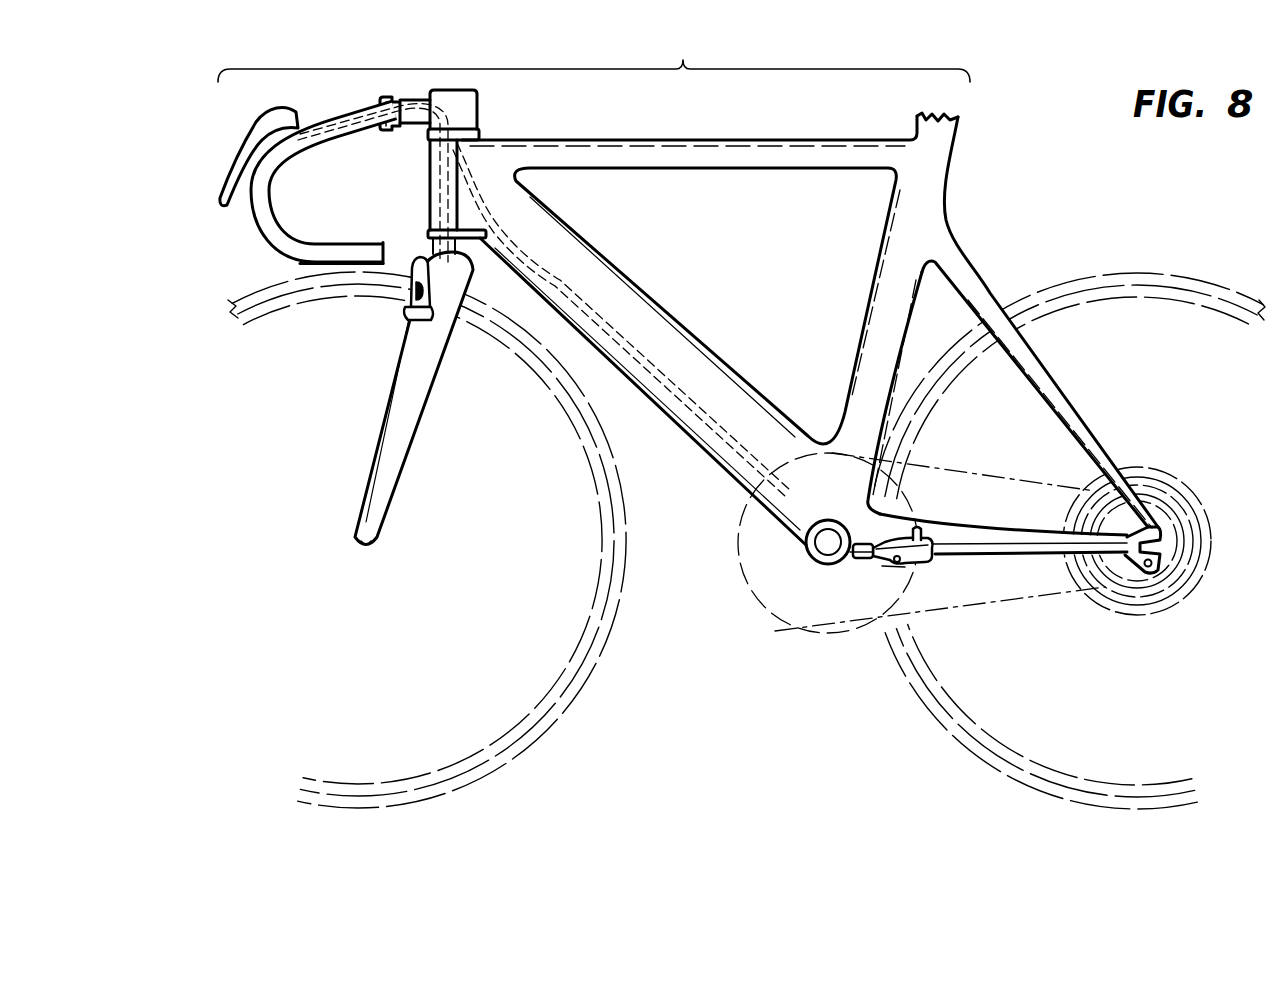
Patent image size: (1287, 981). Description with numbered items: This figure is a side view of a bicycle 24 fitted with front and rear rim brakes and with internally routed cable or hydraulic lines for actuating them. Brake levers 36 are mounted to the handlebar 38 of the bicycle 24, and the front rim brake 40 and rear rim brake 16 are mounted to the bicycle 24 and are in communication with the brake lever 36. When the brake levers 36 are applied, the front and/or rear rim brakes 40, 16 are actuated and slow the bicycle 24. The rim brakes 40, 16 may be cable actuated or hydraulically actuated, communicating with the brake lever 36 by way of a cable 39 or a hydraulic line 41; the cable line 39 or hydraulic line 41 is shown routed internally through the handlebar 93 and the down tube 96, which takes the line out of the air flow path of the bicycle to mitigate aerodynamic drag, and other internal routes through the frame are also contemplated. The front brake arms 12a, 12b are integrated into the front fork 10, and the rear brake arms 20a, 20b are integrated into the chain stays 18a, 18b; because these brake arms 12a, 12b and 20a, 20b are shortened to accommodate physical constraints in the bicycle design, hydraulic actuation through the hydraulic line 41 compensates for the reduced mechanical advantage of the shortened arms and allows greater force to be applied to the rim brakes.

The front fork 10 is at (346, 453).
The front brake arm 12a is at (408, 286).
The front brake arm 12b is at (418, 313).
The rear rim brake 16 is at (947, 572).
The chain stay 18a is at (972, 516).
The chain stay 18b is at (1028, 548).
The rear brake arm 20a is at (886, 570).
The rear brake arm 20b is at (893, 561).
The bicycle 24 is at (594, 135).
The brake lever 36 is at (240, 131).
The handlebar 38 is at (262, 252).
The cable 39 is at (428, 178).
The front rim brake 40 is at (378, 335).
The hydraulic line 41 is at (484, 194).
The handlebar 93 is at (341, 108).
The down tube 96 is at (665, 312).